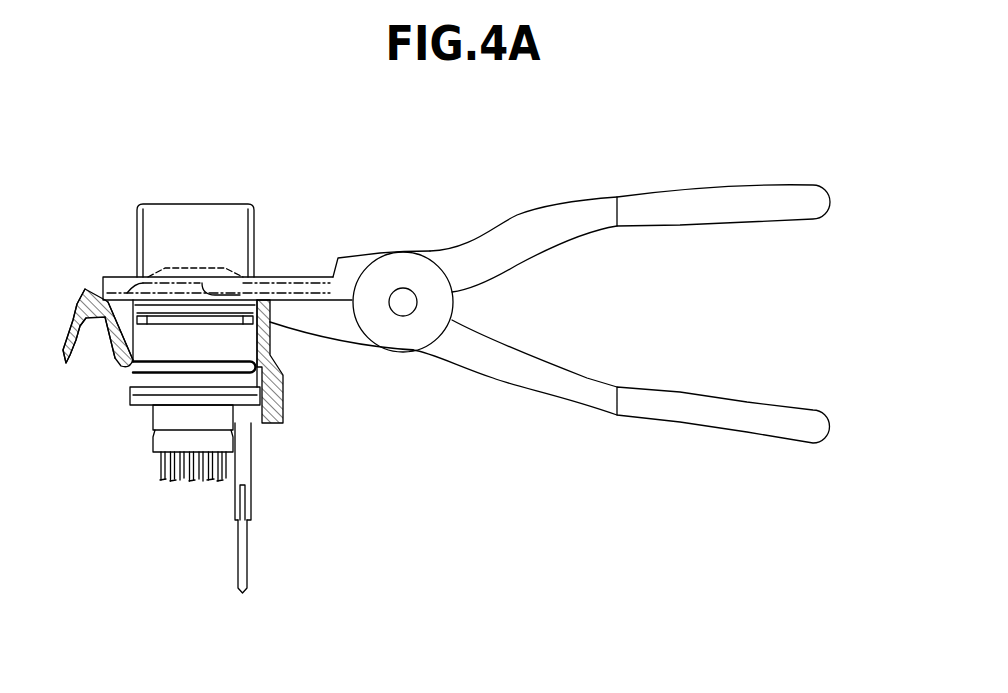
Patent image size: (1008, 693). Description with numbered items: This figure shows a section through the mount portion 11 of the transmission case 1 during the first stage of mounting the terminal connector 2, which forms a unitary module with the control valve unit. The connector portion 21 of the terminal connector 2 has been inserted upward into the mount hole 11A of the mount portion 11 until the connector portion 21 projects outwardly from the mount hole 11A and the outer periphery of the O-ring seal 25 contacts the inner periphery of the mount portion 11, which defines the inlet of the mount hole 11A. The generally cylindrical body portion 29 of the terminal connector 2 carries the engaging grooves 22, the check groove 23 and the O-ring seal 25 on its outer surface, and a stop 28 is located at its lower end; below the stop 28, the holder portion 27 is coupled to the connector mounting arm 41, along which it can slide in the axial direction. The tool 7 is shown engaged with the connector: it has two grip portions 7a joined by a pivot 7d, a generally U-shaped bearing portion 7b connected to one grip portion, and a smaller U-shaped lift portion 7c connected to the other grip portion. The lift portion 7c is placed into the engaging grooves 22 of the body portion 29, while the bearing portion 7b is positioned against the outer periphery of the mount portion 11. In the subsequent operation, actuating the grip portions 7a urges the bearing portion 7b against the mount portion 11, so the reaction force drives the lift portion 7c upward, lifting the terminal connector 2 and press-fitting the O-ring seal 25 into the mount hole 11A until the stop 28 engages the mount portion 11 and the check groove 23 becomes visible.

The transmission case 1 is at (85, 291).
The mount portion 11 is at (98, 352).
The mount hole 11A is at (117, 360).
The terminal connector 2 is at (223, 204).
The connector portion 21 is at (255, 222).
The engaging grooves 22 is at (245, 286).
The check groove 23 is at (232, 345).
The O-ring seal 25 is at (283, 383).
The holder portion 27 is at (258, 468).
The stop 28 is at (140, 400).
The body portion 29 is at (270, 325).
The connector mounting arm 41 is at (248, 555).
The tool 7 is at (550, 281).
The grip portions 7a is at (763, 198).
The bearing portion 7b is at (120, 277).
The lift portion 7c is at (300, 278).
The pivot 7d is at (410, 302).